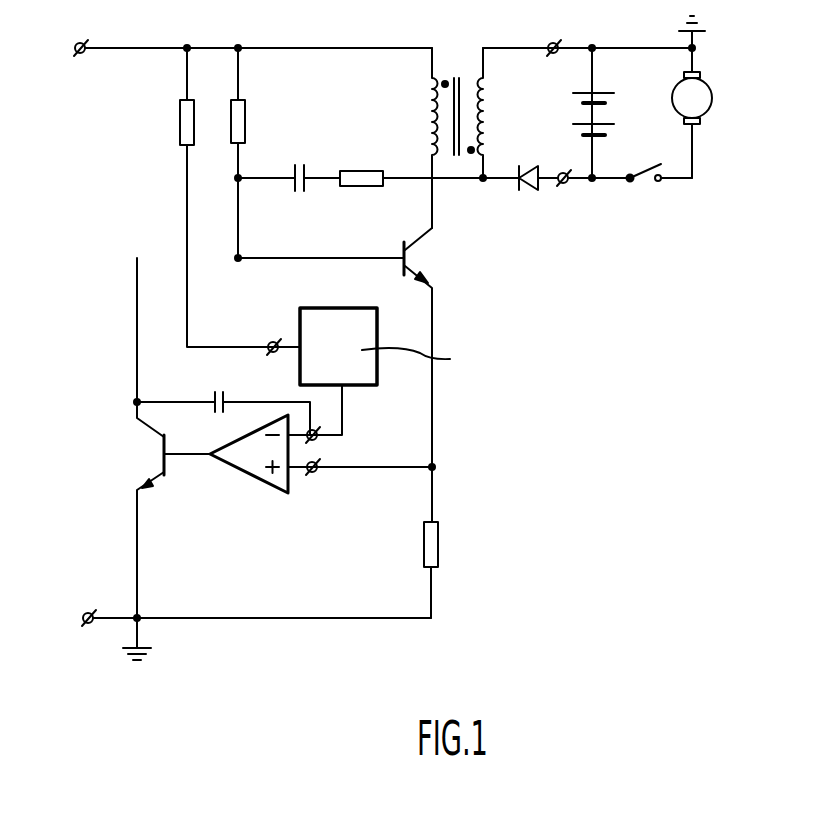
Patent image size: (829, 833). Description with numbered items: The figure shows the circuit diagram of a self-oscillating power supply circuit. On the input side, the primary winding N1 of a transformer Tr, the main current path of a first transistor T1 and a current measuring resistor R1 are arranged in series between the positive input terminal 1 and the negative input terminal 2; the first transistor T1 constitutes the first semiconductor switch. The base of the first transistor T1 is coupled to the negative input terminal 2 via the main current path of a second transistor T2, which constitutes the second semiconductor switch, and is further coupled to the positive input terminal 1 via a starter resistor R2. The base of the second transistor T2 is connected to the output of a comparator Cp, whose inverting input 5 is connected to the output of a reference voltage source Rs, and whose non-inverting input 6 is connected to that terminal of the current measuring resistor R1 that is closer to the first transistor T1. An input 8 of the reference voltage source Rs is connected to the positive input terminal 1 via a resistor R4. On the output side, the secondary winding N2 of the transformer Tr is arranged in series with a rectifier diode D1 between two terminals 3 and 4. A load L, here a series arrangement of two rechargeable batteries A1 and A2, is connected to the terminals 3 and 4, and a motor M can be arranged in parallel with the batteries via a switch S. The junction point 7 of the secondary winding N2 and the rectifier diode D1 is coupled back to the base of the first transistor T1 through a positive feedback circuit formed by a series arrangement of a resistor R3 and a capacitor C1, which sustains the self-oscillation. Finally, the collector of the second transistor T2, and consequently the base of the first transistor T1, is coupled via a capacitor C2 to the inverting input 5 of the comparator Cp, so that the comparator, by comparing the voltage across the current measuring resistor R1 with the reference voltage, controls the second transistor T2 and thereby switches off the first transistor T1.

The positive input terminal 1 is at (77, 44).
The negative input terminal 2 is at (85, 613).
The output terminal 3 is at (554, 42).
The output terminal 4 is at (567, 186).
The inverting input 5 is at (316, 437).
The non-inverting input 6 is at (314, 473).
The junction point 7 is at (483, 183).
The input of the reference voltage source 8 is at (274, 353).
The current measuring resistor R1 is at (433, 549).
The starter resistor R2 is at (246, 121).
The resistor R3 is at (364, 186).
The resistor R4 is at (186, 121).
The capacitor C1 is at (298, 191).
The capacitor C2 is at (218, 405).
The first transistor T1 is at (410, 254).
The second transistor T2 is at (160, 453).
The transformer Tr is at (454, 118).
The primary winding N1 is at (431, 140).
The secondary winding N2 is at (478, 138).
The rectifier diode D1 is at (529, 190).
The rechargeable battery A1 is at (583, 104).
The rechargeable battery A2 is at (583, 136).
The load L is at (650, 120).
The motor M is at (692, 113).
The switch S is at (660, 189).
The reference voltage source Rs is at (323, 322).
The comparator Cp is at (253, 465).